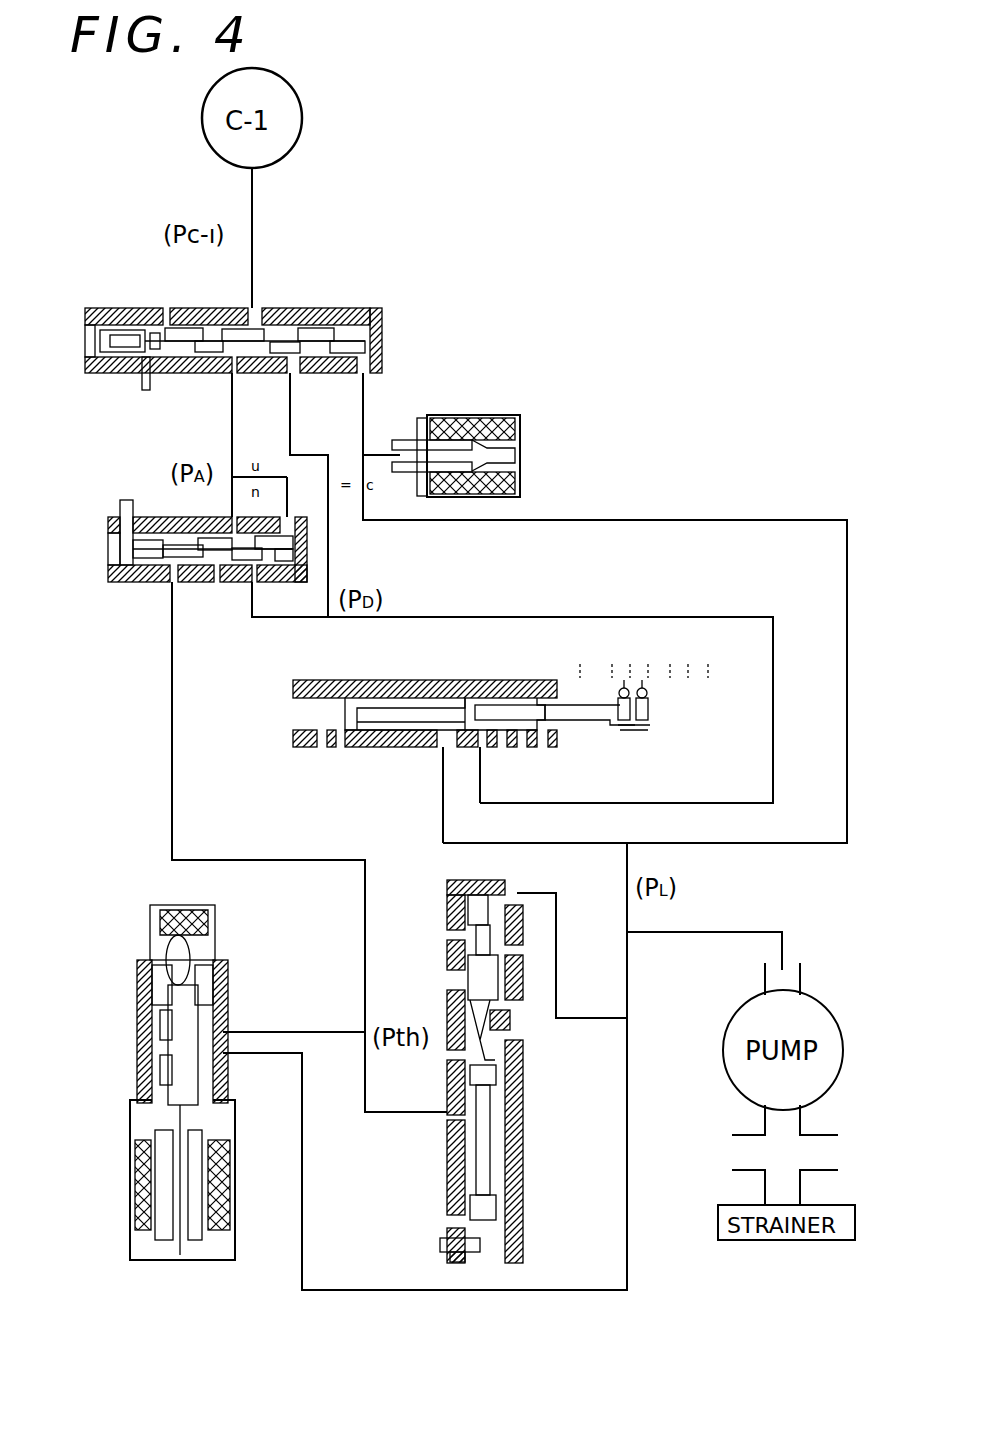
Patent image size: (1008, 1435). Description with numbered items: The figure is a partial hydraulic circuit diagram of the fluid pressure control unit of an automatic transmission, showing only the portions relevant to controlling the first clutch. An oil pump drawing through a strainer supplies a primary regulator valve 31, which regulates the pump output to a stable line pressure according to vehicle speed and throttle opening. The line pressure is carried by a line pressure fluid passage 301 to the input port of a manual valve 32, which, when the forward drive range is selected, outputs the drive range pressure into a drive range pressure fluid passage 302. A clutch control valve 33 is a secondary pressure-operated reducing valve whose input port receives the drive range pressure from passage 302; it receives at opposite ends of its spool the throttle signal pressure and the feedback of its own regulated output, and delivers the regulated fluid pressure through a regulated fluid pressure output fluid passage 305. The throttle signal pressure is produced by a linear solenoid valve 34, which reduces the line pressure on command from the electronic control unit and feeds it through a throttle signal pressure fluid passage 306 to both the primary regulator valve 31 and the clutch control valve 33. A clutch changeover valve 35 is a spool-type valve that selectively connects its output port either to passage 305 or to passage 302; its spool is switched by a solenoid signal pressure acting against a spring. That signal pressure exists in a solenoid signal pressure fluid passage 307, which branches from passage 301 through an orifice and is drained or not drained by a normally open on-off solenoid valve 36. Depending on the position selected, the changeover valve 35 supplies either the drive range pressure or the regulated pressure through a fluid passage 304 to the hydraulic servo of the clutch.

The primary regulator valve 31 is at (535, 1245).
The manual valve 32 is at (290, 704).
The C-1 control valve 33 is at (120, 603).
The linear solenoid valve 34 is at (207, 1270).
The C-1 changeover valve 35 is at (108, 385).
The solenoid valve 36 is at (527, 446).
The line pressure fluid passage 301 is at (441, 793).
The D range pressure fluid passage 302 is at (653, 803).
The fluid passage 304 is at (258, 238).
The regulated fluid pressure output fluid passage 305 is at (230, 397).
The throttle signal pressure fluid passage 306 is at (365, 912).
The solenoid signal pressure fluid passage 307 is at (363, 405).